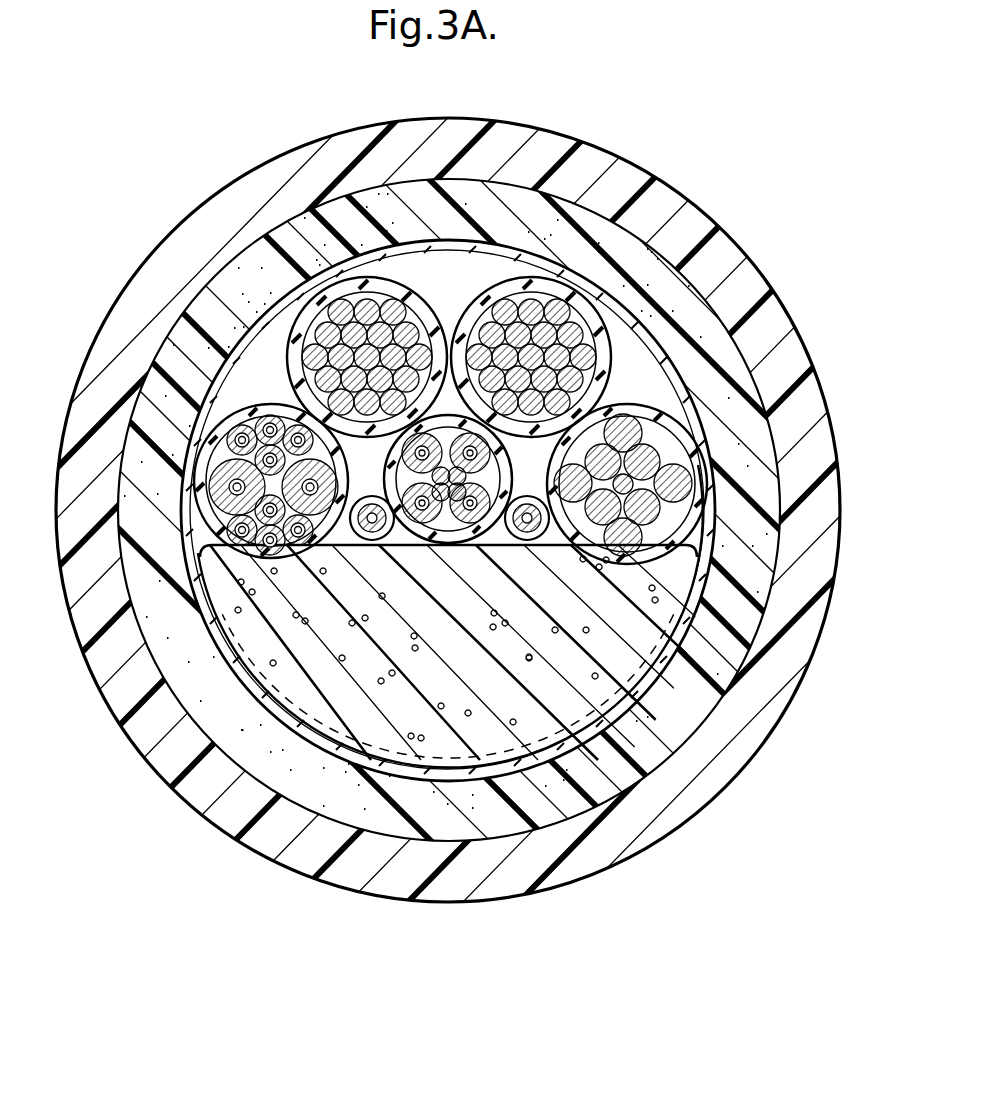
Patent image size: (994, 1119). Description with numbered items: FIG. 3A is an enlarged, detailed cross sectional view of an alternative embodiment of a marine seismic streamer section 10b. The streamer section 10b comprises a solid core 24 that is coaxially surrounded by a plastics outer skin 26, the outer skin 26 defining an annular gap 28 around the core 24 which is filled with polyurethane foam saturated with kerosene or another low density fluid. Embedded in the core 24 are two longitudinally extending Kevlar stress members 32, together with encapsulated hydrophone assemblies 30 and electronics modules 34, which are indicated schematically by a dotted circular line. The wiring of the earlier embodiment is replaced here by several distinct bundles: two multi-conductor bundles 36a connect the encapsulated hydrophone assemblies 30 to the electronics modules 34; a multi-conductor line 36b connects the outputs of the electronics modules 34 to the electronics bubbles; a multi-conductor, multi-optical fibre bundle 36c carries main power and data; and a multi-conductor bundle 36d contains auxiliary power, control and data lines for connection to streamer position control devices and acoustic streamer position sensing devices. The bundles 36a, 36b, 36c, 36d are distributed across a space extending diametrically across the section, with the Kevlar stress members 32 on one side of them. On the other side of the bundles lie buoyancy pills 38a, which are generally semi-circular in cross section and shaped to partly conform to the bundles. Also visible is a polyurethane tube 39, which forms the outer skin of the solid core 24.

The streamer section 10b is at (606, 102).
The solid core 24 is at (652, 391).
The plastics outer skin 26 is at (616, 875).
The annular gap 28 is at (620, 765).
The encapsulated hydrophone assemblies 30 is at (660, 620).
The electronics modules 34 is at (690, 626).
The Kevlar stress members 32 is at (404, 310).
The multi-conductor bundles 36a is at (458, 556).
The multi-conductor line 36b is at (300, 386).
The main power and data bundle 36c is at (138, 392).
The multi-conductor bundle 36d is at (690, 462).
The buoyancy pills 38a is at (370, 710).
The polyurethane tube 39 is at (645, 687).